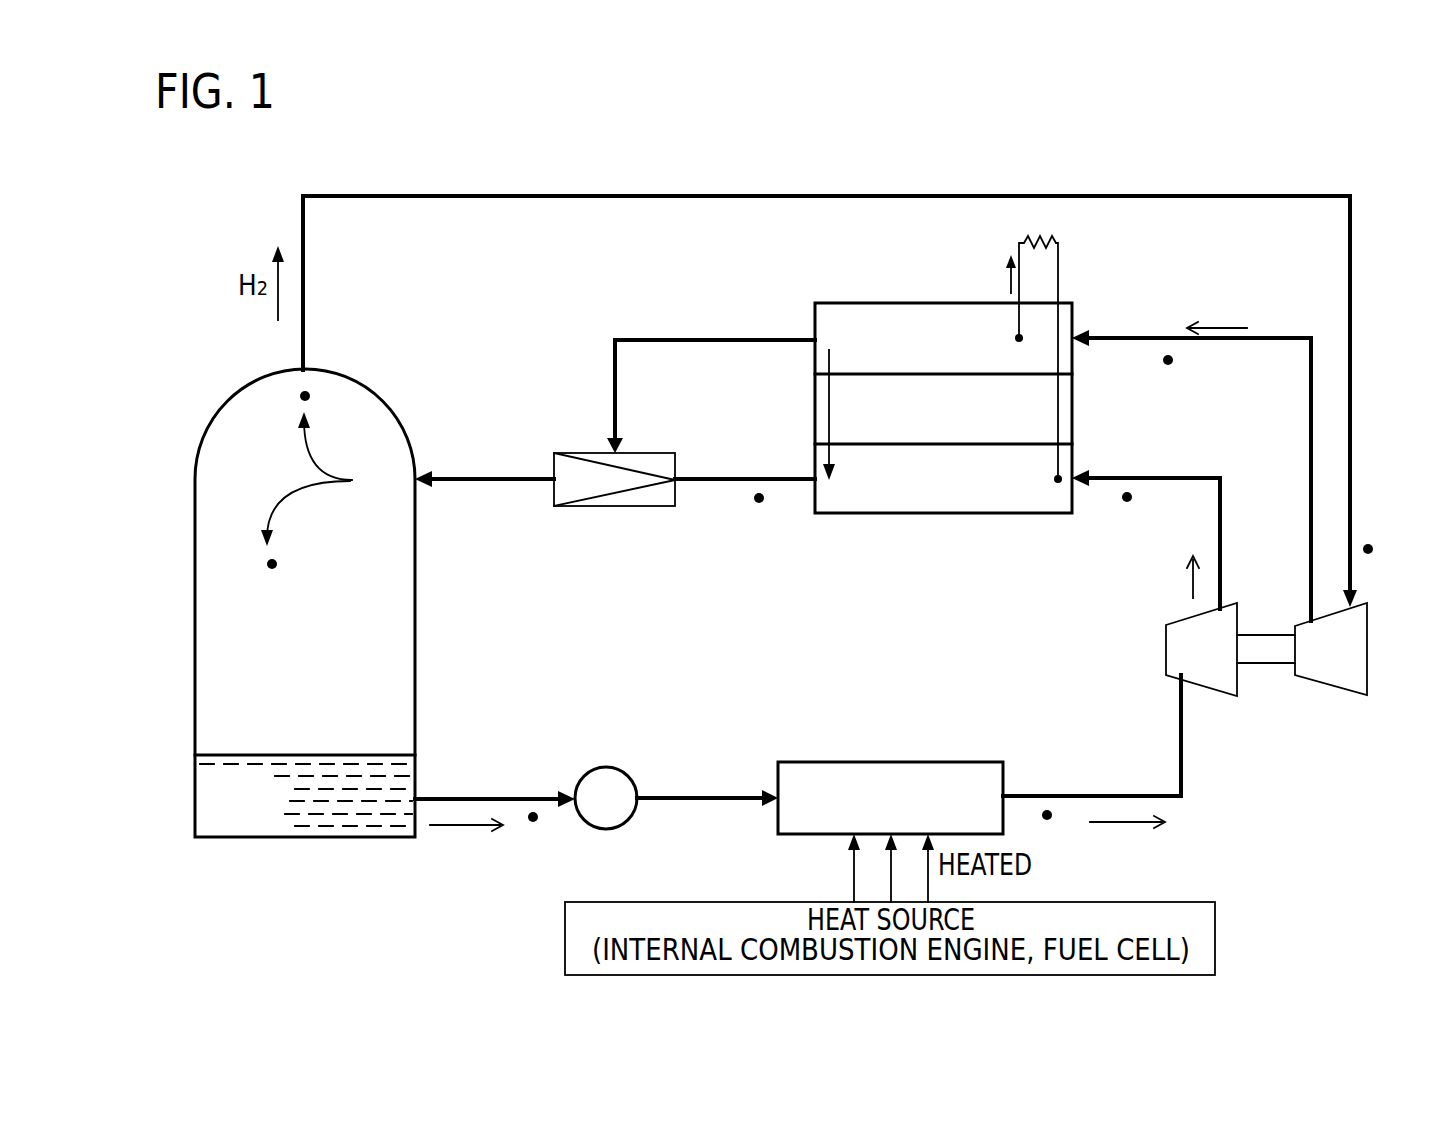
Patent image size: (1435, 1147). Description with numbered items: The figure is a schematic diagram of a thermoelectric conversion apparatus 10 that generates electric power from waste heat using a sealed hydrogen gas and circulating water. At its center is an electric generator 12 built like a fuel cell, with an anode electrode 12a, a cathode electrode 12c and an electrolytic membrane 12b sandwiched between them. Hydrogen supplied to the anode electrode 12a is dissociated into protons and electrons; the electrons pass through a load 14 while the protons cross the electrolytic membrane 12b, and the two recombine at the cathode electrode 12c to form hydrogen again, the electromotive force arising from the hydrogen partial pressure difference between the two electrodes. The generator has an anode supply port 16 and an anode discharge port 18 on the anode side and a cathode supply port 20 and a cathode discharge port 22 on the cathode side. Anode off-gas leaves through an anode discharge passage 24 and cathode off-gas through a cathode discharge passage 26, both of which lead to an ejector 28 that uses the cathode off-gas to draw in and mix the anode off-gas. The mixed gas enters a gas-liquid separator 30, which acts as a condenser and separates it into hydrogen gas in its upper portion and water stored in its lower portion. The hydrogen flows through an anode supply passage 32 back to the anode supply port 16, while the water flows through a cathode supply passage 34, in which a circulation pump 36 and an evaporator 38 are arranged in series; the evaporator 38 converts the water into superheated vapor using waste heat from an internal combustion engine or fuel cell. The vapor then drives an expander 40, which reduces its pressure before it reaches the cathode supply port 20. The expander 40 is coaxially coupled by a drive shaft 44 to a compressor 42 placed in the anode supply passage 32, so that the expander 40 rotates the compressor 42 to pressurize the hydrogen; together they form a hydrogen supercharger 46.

The thermoelectric conversion apparatus 10 is at (1252, 138).
The electric generator 12 is at (940, 409).
The anode electrode 12a is at (860, 303).
The electrolytic membrane 12b is at (812, 396).
The cathode electrode 12c is at (860, 513).
The load 14 is at (1038, 238).
The anode supply port 16 is at (1078, 336).
The anode discharge port 18 is at (812, 337).
The cathode supply port 20 is at (1078, 476).
The cathode discharge port 22 is at (812, 476).
The anode discharge passage 24 is at (641, 340).
The cathode discharge passage 26 is at (720, 478).
The ejector 28 is at (668, 453).
The gas-liquid separator 30 is at (195, 628).
The anode supply passage 32 is at (556, 196).
The cathode supply passage 34 is at (497, 798).
The circulation pump 36 is at (628, 768).
The evaporator 38 is at (985, 762).
The expander 40 is at (1235, 700).
The compressor 42 is at (1340, 680).
The drive shaft 44 is at (1265, 645).
The hydrogen supercharger 46 is at (1282, 698).